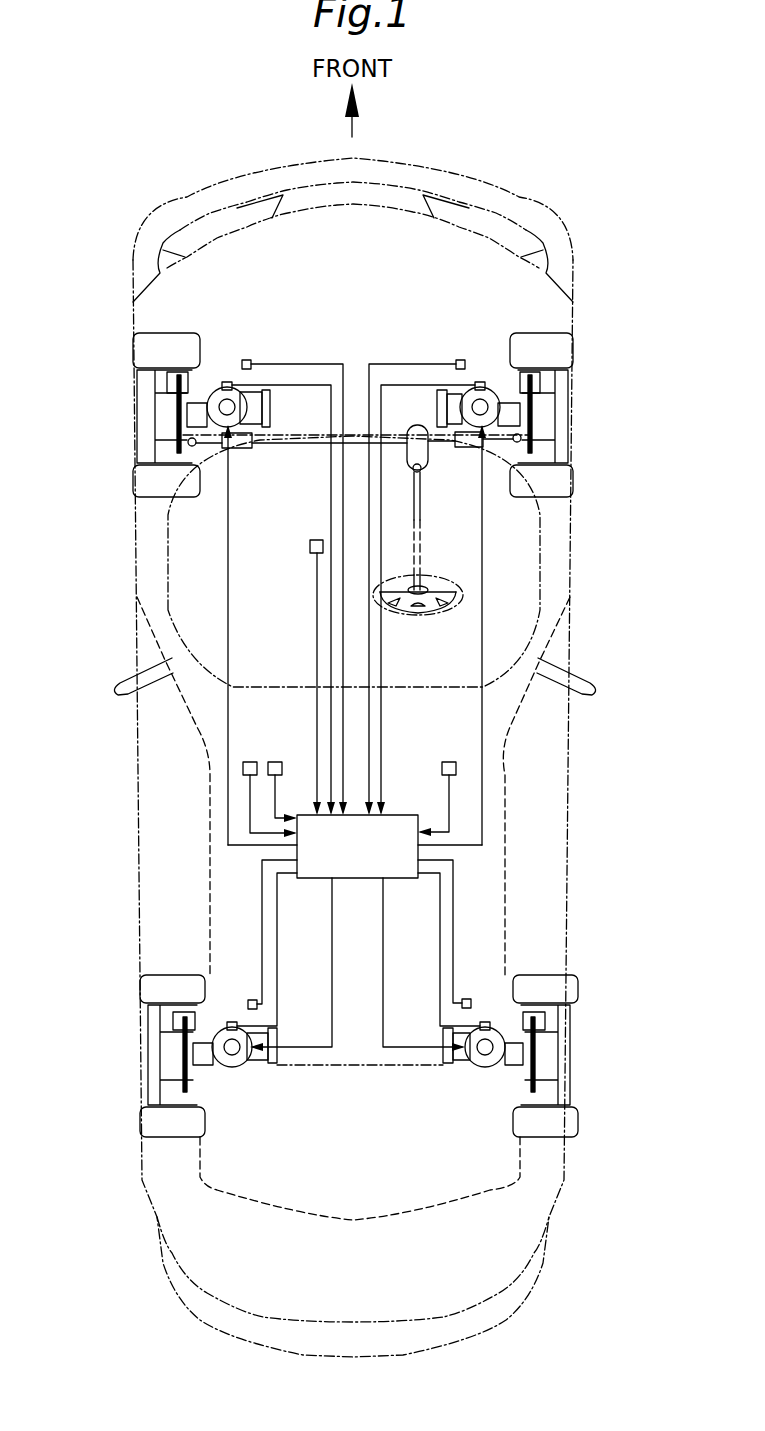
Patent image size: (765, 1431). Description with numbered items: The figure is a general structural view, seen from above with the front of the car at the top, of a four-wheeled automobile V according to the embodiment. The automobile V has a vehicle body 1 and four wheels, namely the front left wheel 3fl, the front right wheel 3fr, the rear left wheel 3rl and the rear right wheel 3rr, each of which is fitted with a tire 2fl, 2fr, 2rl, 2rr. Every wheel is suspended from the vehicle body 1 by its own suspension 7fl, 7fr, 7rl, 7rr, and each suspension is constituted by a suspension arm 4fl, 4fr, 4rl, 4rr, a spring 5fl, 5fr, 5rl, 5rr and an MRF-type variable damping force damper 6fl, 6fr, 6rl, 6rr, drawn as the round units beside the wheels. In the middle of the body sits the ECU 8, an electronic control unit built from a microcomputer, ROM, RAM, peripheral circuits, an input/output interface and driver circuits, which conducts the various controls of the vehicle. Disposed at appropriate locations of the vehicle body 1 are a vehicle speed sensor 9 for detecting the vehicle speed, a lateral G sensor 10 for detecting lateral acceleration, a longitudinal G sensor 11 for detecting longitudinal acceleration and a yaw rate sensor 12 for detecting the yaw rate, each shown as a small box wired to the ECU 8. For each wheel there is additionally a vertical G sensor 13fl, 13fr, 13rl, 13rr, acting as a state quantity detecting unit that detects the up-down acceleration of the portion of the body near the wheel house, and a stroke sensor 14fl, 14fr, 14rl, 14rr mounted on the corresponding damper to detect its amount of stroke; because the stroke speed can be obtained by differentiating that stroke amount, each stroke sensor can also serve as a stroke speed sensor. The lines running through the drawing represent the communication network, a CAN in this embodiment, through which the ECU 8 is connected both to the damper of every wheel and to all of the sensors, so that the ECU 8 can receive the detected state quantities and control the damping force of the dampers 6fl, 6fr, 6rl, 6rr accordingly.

The automobile V is at (130, 203).
The vehicle body 1 is at (553, 227).
The tire 2fl is at (147, 488).
The tire 2fr is at (563, 487).
The tire 2rl is at (152, 1128).
The tire 2rr is at (568, 1125).
The front left wheel 3fl is at (143, 380).
The front right wheel 3fr is at (567, 375).
The rear left wheel 3rl is at (147, 1018).
The rear right wheel 3rr is at (572, 1017).
The suspension arm 4fl is at (205, 418).
The suspension arm 4fr is at (507, 418).
The suspension arm 4rl is at (212, 1058).
The suspension arm 4rr is at (508, 1058).
The spring 5fl is at (218, 408).
The spring 5fr is at (500, 405).
The spring 5rl is at (215, 1047).
The spring 5rr is at (503, 1045).
The MRF-type variable damping force damper 6fl is at (233, 430).
The MRF-type variable damping force damper 6fr is at (477, 418).
The MRF-type variable damping force damper 6rl is at (235, 1067).
The MRF-type variable damping force damper 6rr is at (483, 1057).
The suspension 7fl is at (205, 436).
The suspension 7fr is at (503, 433).
The suspension 7rl is at (213, 1072).
The suspension 7rr is at (507, 1072).
The ECU 8 is at (395, 815).
The vehicle speed sensor 9 is at (316, 540).
The lateral G sensor 10 is at (250, 762).
The longitudinal G sensor 11 is at (278, 762).
The yaw rate sensor 12 is at (449, 762).
The vertical G sensor 13fl is at (253, 360).
The vertical G sensor 13fr is at (457, 358).
The vertical G sensor 13rl is at (250, 997).
The vertical G sensor 13rr is at (470, 998).
The stroke sensor 14fl is at (224, 382).
The stroke sensor 14fr is at (483, 382).
The stroke sensor 14rl is at (227, 1020).
The stroke sensor 14rr is at (487, 1020).